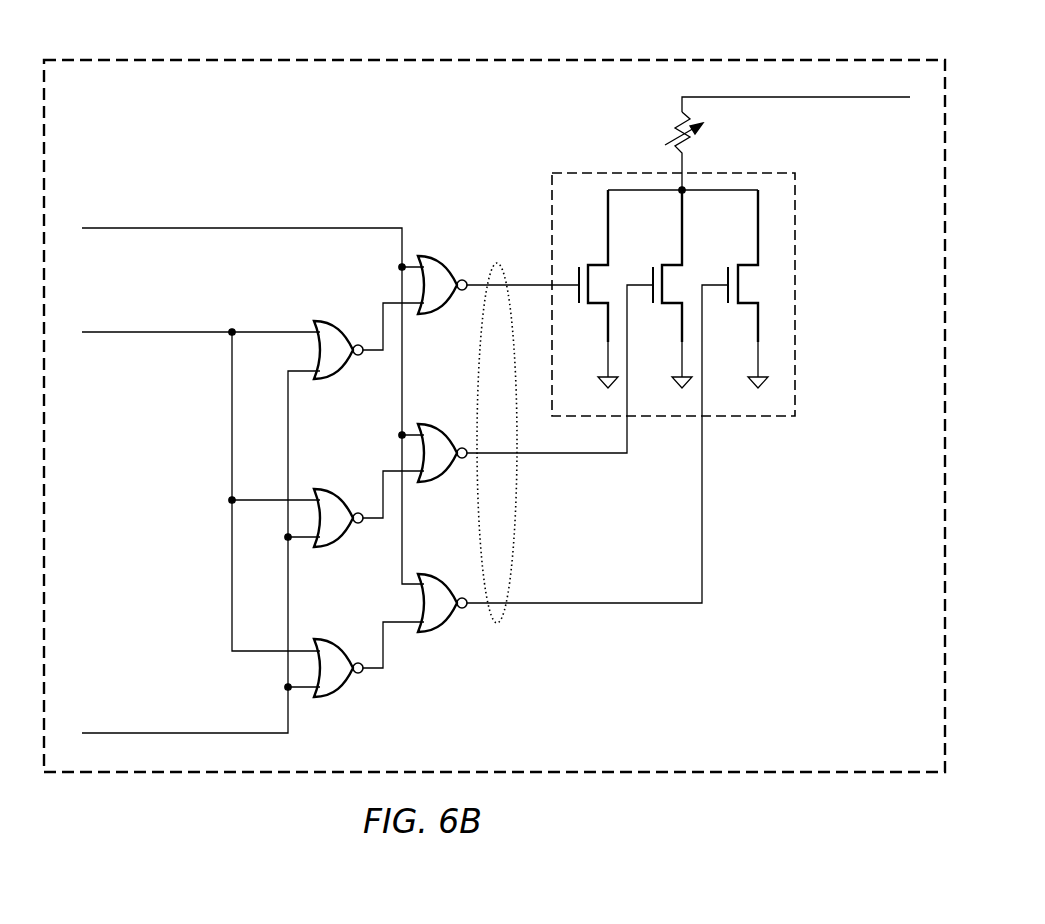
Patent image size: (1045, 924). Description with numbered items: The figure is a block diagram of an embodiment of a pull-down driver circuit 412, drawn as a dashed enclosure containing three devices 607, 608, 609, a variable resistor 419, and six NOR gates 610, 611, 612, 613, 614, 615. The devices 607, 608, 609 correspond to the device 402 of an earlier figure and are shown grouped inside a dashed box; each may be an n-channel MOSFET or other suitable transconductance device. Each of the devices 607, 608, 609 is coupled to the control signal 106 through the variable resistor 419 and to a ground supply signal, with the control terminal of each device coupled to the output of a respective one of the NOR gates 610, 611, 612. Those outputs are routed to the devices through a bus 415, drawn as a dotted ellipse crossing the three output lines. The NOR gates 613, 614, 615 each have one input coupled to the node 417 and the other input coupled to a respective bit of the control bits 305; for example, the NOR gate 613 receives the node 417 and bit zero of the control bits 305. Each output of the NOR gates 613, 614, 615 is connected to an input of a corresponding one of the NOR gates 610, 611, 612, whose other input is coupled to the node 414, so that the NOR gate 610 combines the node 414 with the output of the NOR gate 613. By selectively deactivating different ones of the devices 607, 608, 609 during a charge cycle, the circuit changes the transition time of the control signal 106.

The pull-down driver circuit 412 is at (95, 60).
The node 414 is at (253, 393).
The control bits 305 is at (201, 466).
The node 417 is at (201, 552).
The NOR gate 610 is at (438, 255).
The NOR gate 611 is at (438, 424).
The NOR gate 612 is at (438, 574).
The NOR gate 613 is at (348, 321).
The NOR gate 614 is at (348, 489).
The NOR gate 615 is at (348, 639).
The bus 415 is at (497, 625).
The control signal 106 is at (796, 110).
The variable resistor 419 is at (665, 132).
The device 402 is at (796, 302).
The device 607 is at (584, 262).
The device 608 is at (658, 262).
The device 609 is at (733, 262).